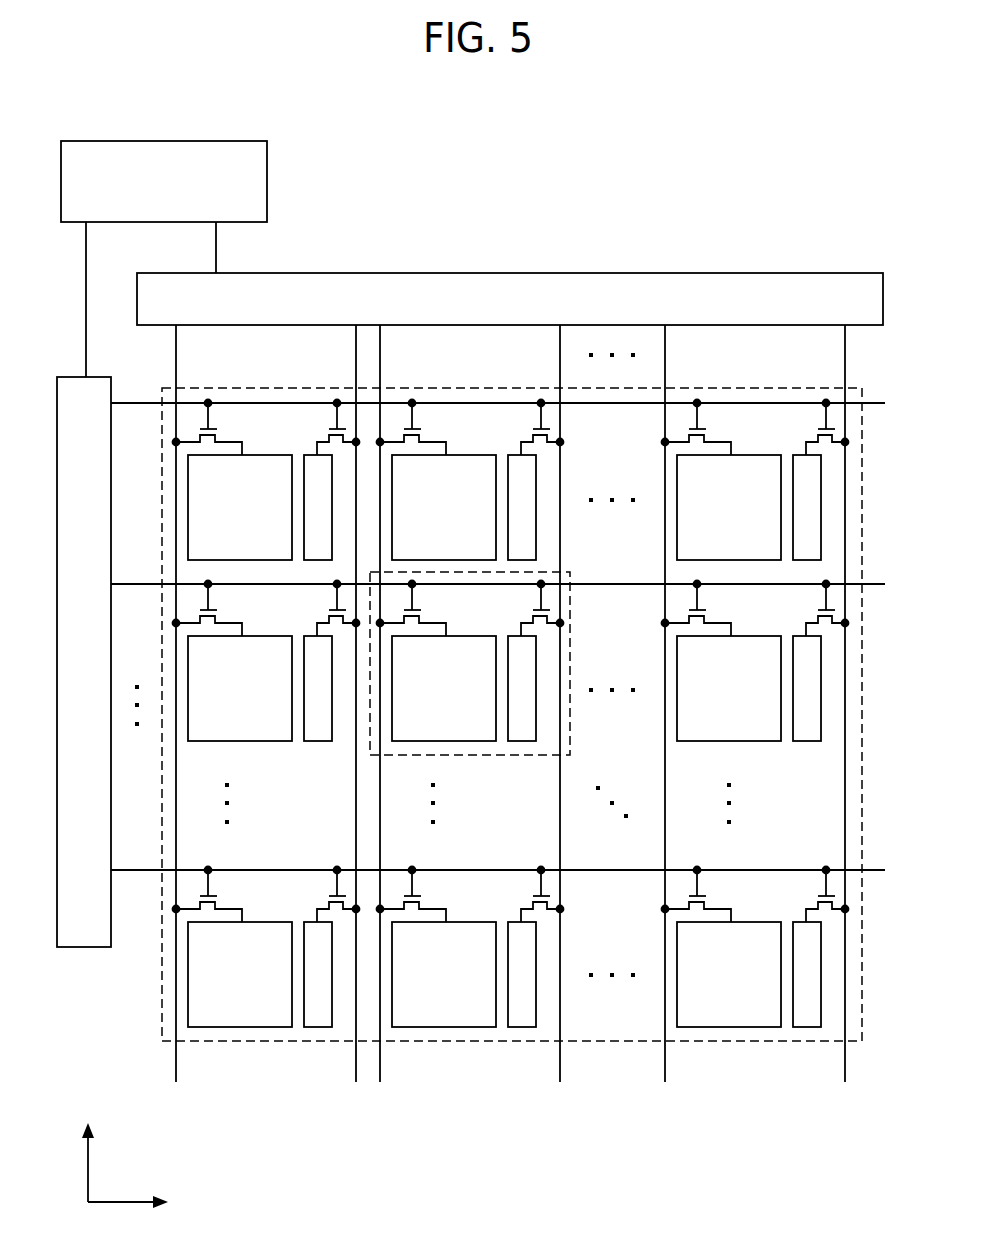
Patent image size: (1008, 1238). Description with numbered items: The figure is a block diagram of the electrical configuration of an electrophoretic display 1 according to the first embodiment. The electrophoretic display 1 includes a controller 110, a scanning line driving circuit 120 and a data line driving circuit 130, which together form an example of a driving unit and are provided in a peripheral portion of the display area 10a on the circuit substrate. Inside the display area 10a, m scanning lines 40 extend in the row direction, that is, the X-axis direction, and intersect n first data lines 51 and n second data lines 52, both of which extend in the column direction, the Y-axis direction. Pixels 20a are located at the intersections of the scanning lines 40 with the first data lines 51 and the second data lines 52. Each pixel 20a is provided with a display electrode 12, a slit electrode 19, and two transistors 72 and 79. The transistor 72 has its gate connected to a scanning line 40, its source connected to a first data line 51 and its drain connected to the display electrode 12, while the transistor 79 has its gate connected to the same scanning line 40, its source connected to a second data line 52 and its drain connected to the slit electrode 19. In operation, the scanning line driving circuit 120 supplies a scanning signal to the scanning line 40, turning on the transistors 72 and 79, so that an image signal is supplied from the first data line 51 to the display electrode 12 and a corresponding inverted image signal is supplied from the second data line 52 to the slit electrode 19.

The electrophoretic display 1 is at (573, 141).
The controller 110 is at (220, 141).
The data line driving circuit 130 is at (566, 273).
The scanning line driving circuit 120 is at (82, 948).
The scanning line 40 is at (127, 402).
The first data line 51 is at (178, 369).
The second data line 52 is at (355, 370).
The display area 10a is at (458, 1041).
The pixel 20a is at (568, 572).
The transistor 72 is at (425, 617).
The transistor 79 is at (535, 617).
The display electrode 12 is at (465, 732).
The slit electrode 19 is at (523, 732).